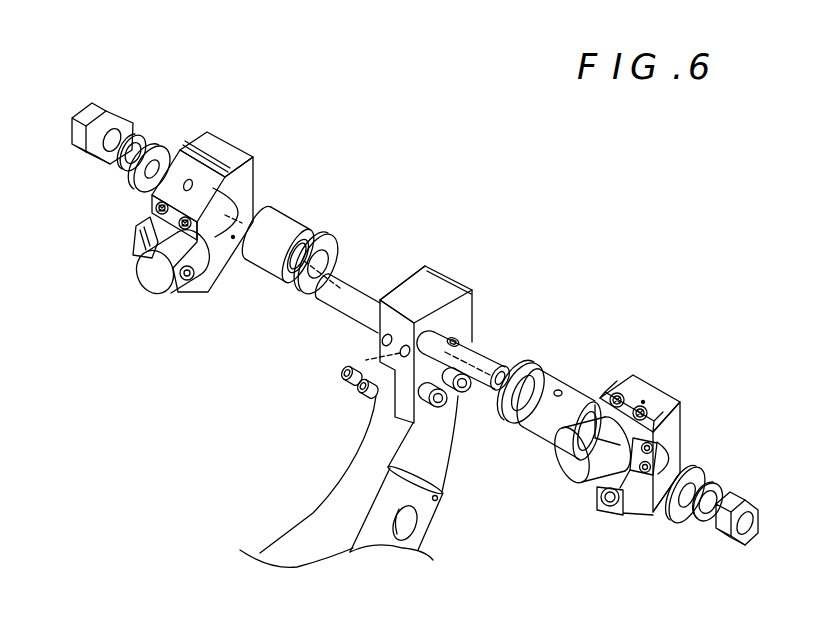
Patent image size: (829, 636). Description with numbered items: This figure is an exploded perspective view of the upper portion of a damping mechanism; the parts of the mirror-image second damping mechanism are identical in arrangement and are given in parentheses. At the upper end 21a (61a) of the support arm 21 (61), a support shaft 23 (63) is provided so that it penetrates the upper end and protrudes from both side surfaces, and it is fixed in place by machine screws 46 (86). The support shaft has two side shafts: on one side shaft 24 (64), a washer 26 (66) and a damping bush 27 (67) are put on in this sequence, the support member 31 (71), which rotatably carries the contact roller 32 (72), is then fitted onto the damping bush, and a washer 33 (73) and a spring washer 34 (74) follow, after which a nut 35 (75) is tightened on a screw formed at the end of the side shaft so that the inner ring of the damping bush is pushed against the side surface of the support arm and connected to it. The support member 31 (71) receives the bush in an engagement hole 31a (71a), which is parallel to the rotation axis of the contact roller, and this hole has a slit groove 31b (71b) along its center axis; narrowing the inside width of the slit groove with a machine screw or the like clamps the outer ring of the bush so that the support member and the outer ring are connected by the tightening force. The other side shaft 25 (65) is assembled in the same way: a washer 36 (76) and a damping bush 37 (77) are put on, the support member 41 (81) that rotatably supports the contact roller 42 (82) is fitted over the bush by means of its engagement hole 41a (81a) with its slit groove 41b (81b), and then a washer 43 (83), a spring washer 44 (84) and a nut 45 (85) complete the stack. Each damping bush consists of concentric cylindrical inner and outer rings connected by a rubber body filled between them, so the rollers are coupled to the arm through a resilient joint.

The support arm 21 is at (293, 527).
The support arm 61 is at (313, 481).
The upper end of the support arm 21a is at (438, 284).
The upper end of the support arm 61a is at (490, 266).
The support shaft 23 is at (483, 321).
The support shaft 63 is at (483, 321).
The side shaft 24 is at (470, 346).
The side shaft 64 is at (507, 341).
The side shaft 25 is at (383, 290).
The side shaft 65 is at (373, 252).
The washer 26 is at (535, 362).
The washer 66 is at (572, 369).
The damping bush 27 is at (568, 388).
The damping bush 67 is at (597, 400).
The support member 31 is at (691, 469).
The support member 71 is at (691, 469).
The engagement hole 31a is at (665, 460).
The engagement hole 71a is at (722, 436).
The slit groove 31b is at (655, 513).
The slit groove 71b is at (643, 530).
The contact roller 32 is at (575, 471).
The contact roller 72 is at (589, 485).
The washer 33 is at (695, 464).
The washer 73 is at (729, 481).
The spring washer 34 is at (694, 514).
The spring washer 74 is at (690, 545).
The nut 35 is at (709, 530).
The nut 75 is at (734, 539).
The washer 36 is at (317, 240).
The washer 76 is at (341, 228).
The damping bush 37 is at (283, 219).
The damping bush 77 is at (292, 210).
The support member 41 is at (245, 207).
The support member 81 is at (245, 207).
The engagement hole 41a is at (234, 240).
The engagement hole 81a is at (212, 262).
The slit groove 41b is at (224, 149).
The slit groove 81b is at (260, 135).
The contact roller 42 is at (145, 280).
The contact roller 82 is at (164, 289).
The washer 43 is at (128, 187).
The washer 83 is at (129, 221).
The spring washer 44 is at (136, 134).
The spring washer 84 is at (116, 128).
The nut 45 is at (88, 142).
The nut 85 is at (80, 154).
The machine screws 46 is at (358, 386).
The machine screws 86 is at (316, 389).